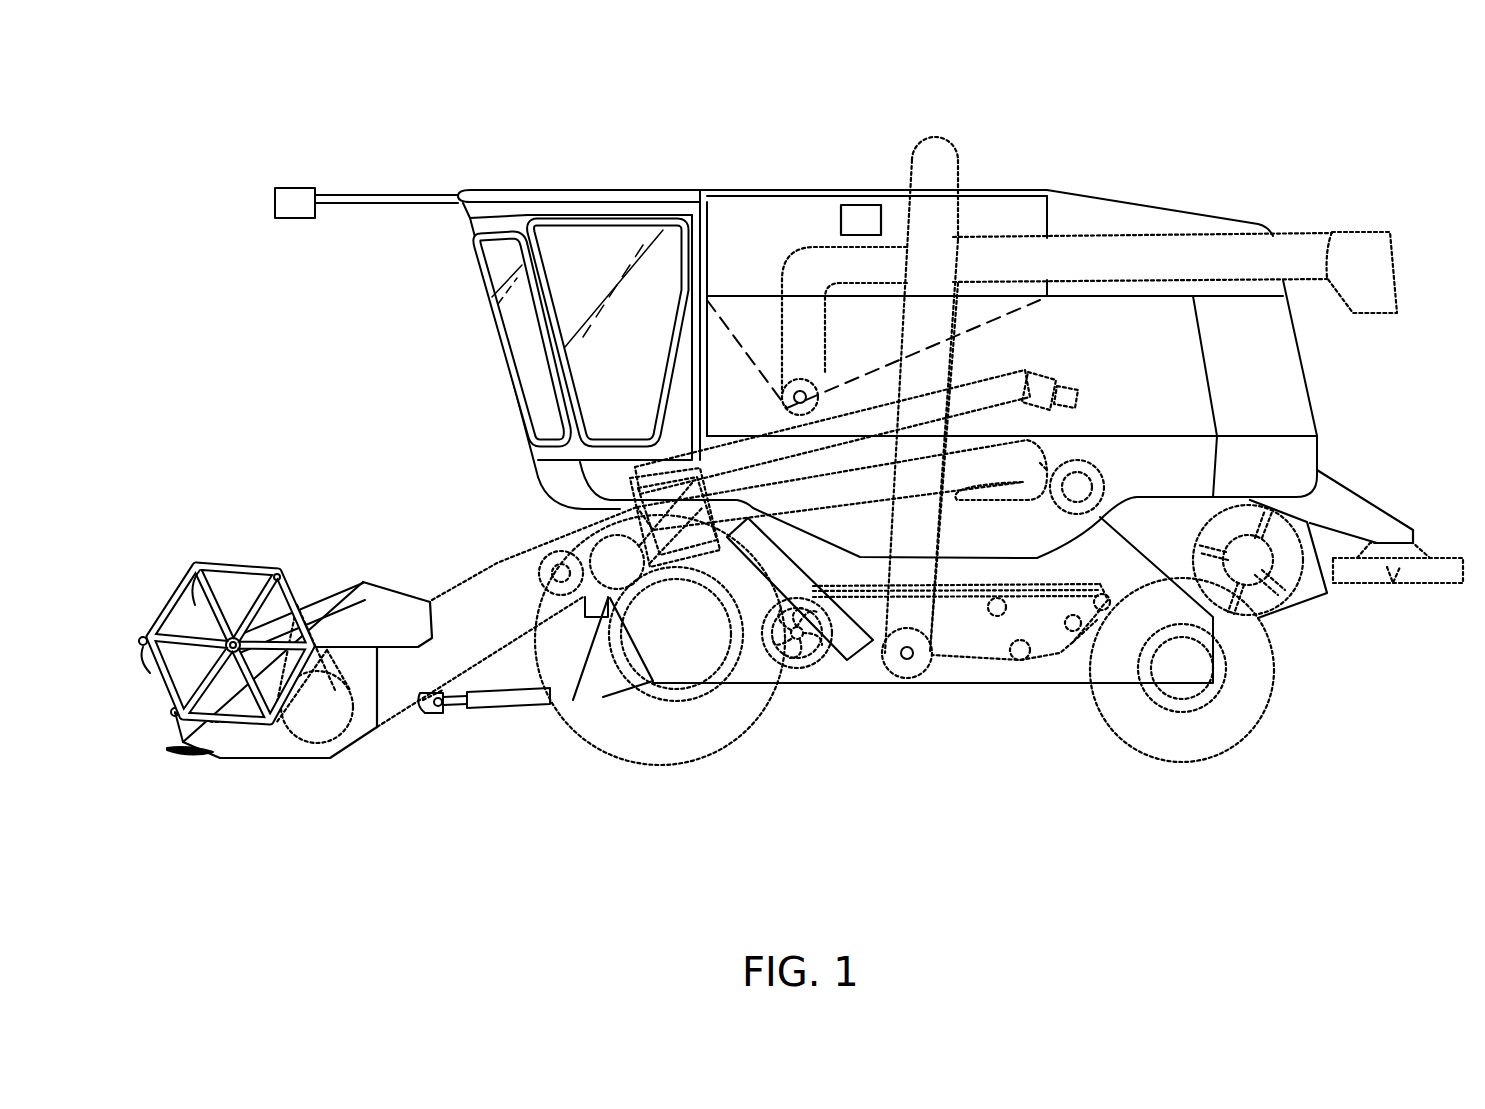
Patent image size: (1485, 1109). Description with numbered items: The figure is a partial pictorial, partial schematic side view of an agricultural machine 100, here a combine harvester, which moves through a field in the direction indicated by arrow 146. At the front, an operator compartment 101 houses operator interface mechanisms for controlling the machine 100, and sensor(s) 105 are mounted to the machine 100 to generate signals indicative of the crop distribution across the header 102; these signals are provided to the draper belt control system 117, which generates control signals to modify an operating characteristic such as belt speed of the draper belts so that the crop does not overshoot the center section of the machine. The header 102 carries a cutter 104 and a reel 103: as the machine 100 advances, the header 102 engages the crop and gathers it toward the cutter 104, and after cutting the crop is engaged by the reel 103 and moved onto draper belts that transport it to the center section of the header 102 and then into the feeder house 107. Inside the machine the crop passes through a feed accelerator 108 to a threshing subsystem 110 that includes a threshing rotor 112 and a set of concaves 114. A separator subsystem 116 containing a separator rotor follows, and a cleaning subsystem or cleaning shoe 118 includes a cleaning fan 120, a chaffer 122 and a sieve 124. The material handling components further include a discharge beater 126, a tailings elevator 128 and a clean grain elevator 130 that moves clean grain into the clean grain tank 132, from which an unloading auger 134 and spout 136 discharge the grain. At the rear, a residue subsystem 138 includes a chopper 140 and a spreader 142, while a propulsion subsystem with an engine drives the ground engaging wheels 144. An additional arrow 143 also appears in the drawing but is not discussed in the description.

The agricultural machine 100 is at (1305, 103).
The operator compartment 101 is at (580, 190).
The header 102 is at (160, 600).
The reel 103 is at (276, 575).
The cutter 104 is at (193, 757).
The sensor 105 is at (300, 188).
The feeder house 107 is at (470, 586).
The feed accelerator 108 is at (593, 543).
The threshing subsystem 110 is at (966, 383).
The threshing rotor 112 is at (1025, 370).
The set of concaves 114 is at (1040, 463).
The separator subsystem 116 is at (963, 505).
The draper belt control system 117 is at (862, 205).
The cleaning subsystem 118 is at (1093, 620).
The cleaning fan 120 is at (770, 655).
The chaffer 122 is at (1097, 577).
The sieve 124 is at (1010, 607).
The discharge beater 126 is at (1093, 475).
The tailings elevator 128 is at (845, 662).
The clean grain elevator 130 is at (930, 612).
The clean grain tank 132 is at (740, 292).
The unloading auger 134 is at (822, 402).
The spout 136 is at (1362, 234).
The residue subsystem 138 is at (1373, 495).
The chopper 140 is at (1257, 613).
The spreader 142 is at (1360, 587).
The upward direction arrow 143 is at (947, 738).
The ground engaging wheels 144 is at (597, 745).
The arrow 146 is at (330, 387).